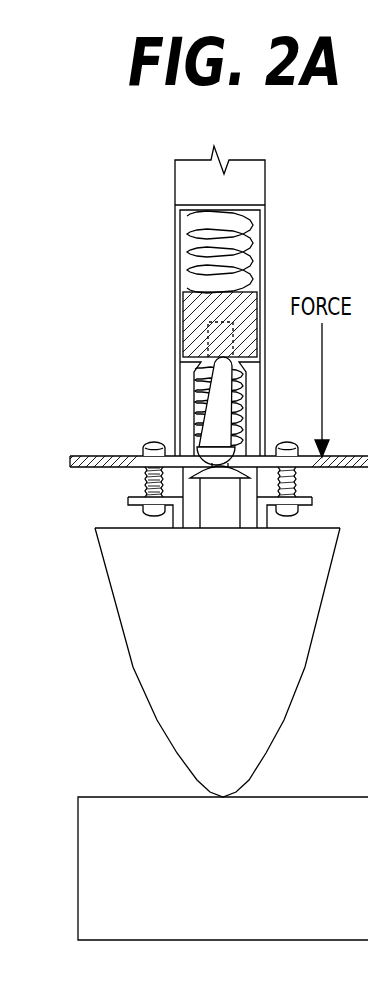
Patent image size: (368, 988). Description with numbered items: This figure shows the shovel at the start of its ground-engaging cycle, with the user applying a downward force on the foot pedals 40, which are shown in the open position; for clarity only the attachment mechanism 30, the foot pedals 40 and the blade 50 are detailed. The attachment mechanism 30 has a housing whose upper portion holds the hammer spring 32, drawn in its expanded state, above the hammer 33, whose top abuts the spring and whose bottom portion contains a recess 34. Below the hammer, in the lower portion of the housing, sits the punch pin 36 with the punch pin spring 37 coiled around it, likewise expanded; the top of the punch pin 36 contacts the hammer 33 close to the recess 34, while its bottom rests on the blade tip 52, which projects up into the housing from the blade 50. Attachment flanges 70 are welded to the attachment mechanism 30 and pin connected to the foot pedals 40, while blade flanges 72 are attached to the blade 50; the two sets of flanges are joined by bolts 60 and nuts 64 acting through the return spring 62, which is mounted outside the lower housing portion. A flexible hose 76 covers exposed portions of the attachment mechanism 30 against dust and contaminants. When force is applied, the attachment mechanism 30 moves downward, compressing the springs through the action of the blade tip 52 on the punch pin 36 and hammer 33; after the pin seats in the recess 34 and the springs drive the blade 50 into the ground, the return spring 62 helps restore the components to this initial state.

The attachment mechanism 30 is at (175, 275).
The hammer spring 32 is at (250, 247).
The hammer 33 is at (192, 330).
The recess 34 is at (225, 337).
The punch pin 36 is at (197, 448).
The punch pin spring 37 is at (198, 403).
The foot pedal 40 is at (85, 456).
The blade 50 is at (133, 667).
The blade tip 52 is at (243, 472).
The bolt 60 is at (148, 443).
The return spring 62 is at (128, 497).
The nut 64 is at (140, 510).
The attachment flange 70 is at (155, 442).
The blade flange 72 is at (145, 490).
The flexible hose 76 is at (296, 483).